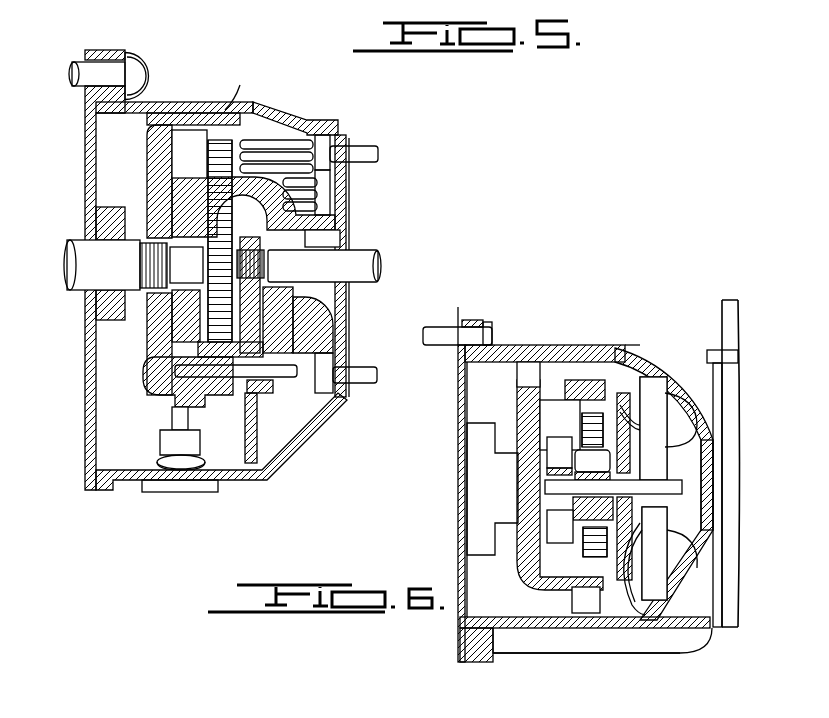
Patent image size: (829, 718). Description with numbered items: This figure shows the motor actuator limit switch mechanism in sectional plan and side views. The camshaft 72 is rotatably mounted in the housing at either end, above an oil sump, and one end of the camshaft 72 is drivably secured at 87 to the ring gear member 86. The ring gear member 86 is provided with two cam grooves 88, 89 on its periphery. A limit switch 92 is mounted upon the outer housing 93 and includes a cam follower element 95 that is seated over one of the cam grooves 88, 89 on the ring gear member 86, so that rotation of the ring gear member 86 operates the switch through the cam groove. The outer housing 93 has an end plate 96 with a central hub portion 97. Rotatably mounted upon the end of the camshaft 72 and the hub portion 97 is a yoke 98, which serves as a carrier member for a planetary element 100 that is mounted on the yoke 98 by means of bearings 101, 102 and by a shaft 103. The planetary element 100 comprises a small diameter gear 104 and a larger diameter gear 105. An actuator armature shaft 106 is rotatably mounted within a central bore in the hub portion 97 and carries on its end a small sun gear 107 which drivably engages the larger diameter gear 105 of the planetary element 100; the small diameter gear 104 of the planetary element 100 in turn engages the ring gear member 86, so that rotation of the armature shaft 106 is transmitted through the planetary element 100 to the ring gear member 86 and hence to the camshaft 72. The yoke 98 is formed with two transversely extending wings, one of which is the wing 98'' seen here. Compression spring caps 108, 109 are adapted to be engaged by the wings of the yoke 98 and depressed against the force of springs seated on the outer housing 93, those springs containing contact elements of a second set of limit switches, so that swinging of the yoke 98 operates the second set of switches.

In FIG. 5, the camshaft 72 is at (74, 283).
In FIG. 5, the ring gear member 86 is at (145, 150).
In FIG. 6, the ring gear member 86 is at (522, 393).
In FIG. 5, the drive connection 87 is at (150, 262).
In FIG. 5, the cam groove 88 is at (170, 420).
In FIG. 6, the cam groove 88 is at (540, 385).
In FIG. 5, the cam groove 89 is at (208, 430).
In FIG. 6, the cam groove 89 is at (572, 605).
In FIG. 5, the limit switch 92 is at (160, 450).
In FIG. 5, the outer housing 93 is at (310, 120).
In FIG. 6, the outer housing 93 is at (575, 350).
In FIG. 5, the cam follower element 95 is at (200, 452).
In FIG. 5, the end plate 96 is at (335, 210).
In FIG. 5, the hub portion 97 is at (340, 238).
In FIG. 5, the yoke 98 is at (202, 236).
In FIG. 6, the yoke 98 is at (638, 485).
In FIG. 6, the wing 98'' is at (653, 488).
In FIG. 5, the planetary element 100 is at (258, 405).
In FIG. 5, the bearing 101 is at (185, 368).
In FIG. 5, the bearing 102 is at (272, 390).
In FIG. 5, the shaft 103 is at (150, 400).
In FIG. 6, the shaft 103 is at (672, 492).
In FIG. 5, the small diameter gear 104 is at (158, 345).
In FIG. 6, the small diameter gear 104 is at (590, 462).
In FIG. 5, the larger diameter gear 105 is at (258, 326).
In FIG. 5, the actuator armature shaft 106 is at (378, 272).
In FIG. 5, the pinion 107 is at (268, 260).
In FIG. 6, the compression spring cap 108 is at (660, 637).
In FIG. 6, the compression spring cap 109 is at (645, 372).